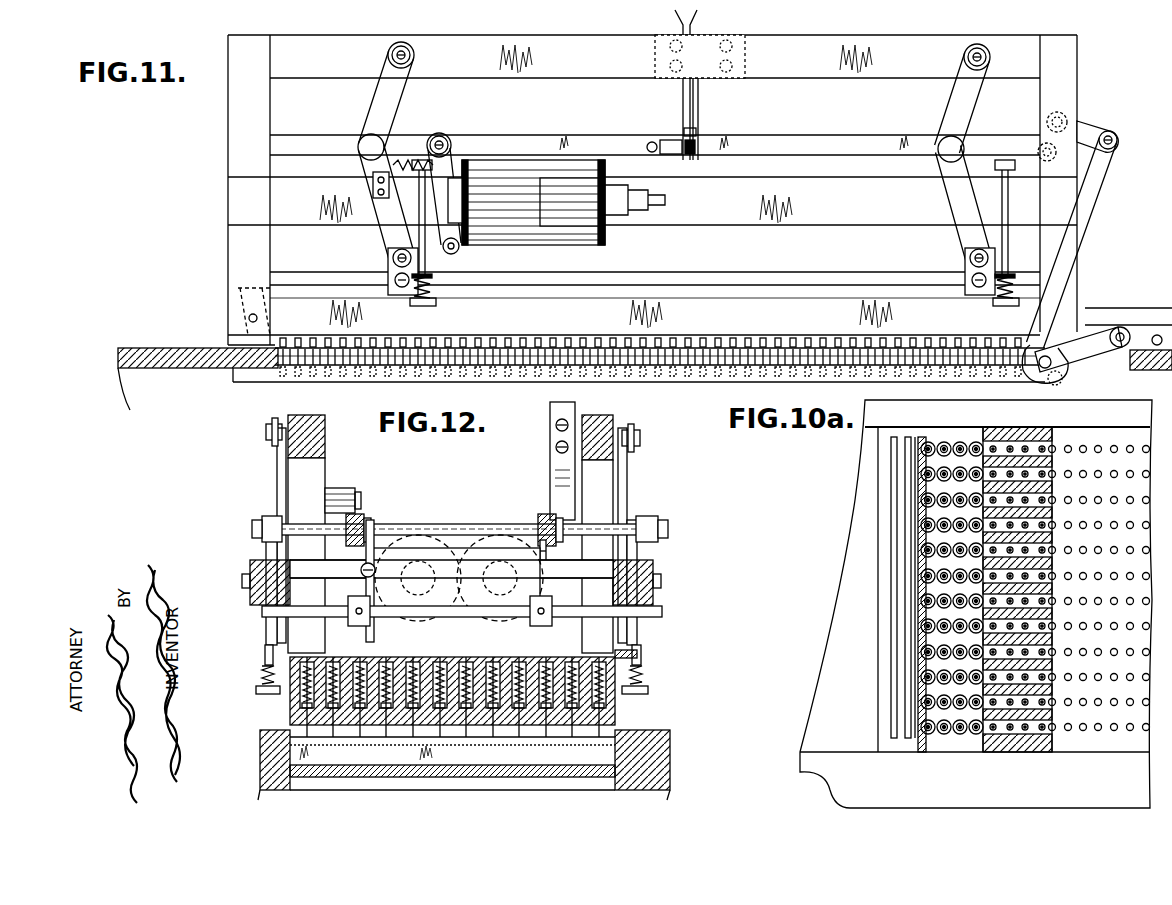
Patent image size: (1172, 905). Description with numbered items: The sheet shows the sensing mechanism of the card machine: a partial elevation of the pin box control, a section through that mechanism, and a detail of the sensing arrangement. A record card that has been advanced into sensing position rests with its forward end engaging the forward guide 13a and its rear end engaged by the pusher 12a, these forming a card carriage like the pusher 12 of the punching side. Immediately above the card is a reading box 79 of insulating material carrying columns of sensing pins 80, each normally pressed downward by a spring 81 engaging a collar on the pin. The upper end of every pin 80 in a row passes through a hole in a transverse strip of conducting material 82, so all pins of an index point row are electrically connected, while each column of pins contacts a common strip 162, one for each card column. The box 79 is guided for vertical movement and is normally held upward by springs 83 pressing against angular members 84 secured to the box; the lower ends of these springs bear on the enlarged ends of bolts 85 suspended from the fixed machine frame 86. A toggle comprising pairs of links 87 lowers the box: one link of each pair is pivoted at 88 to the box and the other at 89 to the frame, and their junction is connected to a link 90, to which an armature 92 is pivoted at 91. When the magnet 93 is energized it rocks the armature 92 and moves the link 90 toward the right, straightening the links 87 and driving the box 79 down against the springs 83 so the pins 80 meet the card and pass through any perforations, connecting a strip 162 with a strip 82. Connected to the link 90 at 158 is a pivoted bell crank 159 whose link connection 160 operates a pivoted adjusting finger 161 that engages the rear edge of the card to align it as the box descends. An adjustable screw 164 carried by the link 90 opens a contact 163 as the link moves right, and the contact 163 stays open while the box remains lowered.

In FIG. 11, the pusher 12 is at (375, 22).
In FIG. 11, the pusher 12a is at (1098, 330).
In FIG. 11, the forward guide 13a is at (277, 312).
In FIG. 11, the reading box 79 is at (703, 298).
In FIG. 12, the reading box 79 is at (292, 700).
In FIG. 11, the sensing pins 80 is at (607, 338).
In FIG. 12, the sensing pins 80 is at (413, 737).
In FIG. 10A, the sensing pins 80 is at (1083, 446).
In FIG. 12, the springs 81 is at (596, 704).
In FIG. 10A, the springs 81 is at (922, 727).
In FIG. 12, the strip of conducting material 82 is at (412, 662).
In FIG. 10A, the strip of conducting material 82 is at (1012, 470).
In FIG. 11, the springs 83 is at (430, 290).
In FIG. 12, the springs 83 is at (262, 678).
In FIG. 11, the angular members 84 is at (432, 276).
In FIG. 12, the angular members 84 is at (268, 660).
In FIG. 11, the bolts 85 is at (423, 307).
In FIG. 12, the bolts 85 is at (256, 690).
In FIG. 11, the machine frame 86 is at (290, 195).
In FIG. 12, the machine frame 86 is at (252, 570).
In FIG. 11, the toggle links 87 is at (370, 175).
In FIG. 12, the toggle links 87 is at (273, 548).
In FIG. 11, the pivot 88 is at (392, 258).
In FIG. 11, the pivot 89 is at (412, 55).
In FIG. 12, the pivot 89 is at (270, 432).
In FIG. 11, the link 90 is at (518, 142).
In FIG. 12, the link 90 is at (358, 522).
In FIG. 11, the pivot 91 is at (443, 134).
In FIG. 11, the armature 92 is at (457, 162).
In FIG. 12, the armature 92 is at (540, 551).
In FIG. 11, the magnet 93 is at (548, 238).
In FIG. 12, the magnet 93 is at (488, 548).
In FIG. 11, the connection 158 is at (1040, 140).
In FIG. 11, the bell crank 159 is at (1088, 126).
In FIG. 12, the bell crank 159 is at (352, 492).
In FIG. 11, the link connection 160 is at (1103, 191).
In FIG. 12, the link connection 160 is at (362, 590).
In FIG. 11, the adjusting finger 161 is at (1085, 368).
In FIG. 11, the common strip 162 is at (533, 356).
In FIG. 12, the common strip 162 is at (470, 768).
In FIG. 10A, the common strip 162 is at (912, 478).
In FIG. 11, the contact 163 is at (698, 130).
In FIG. 11, the adjustable screw 164 is at (690, 155).